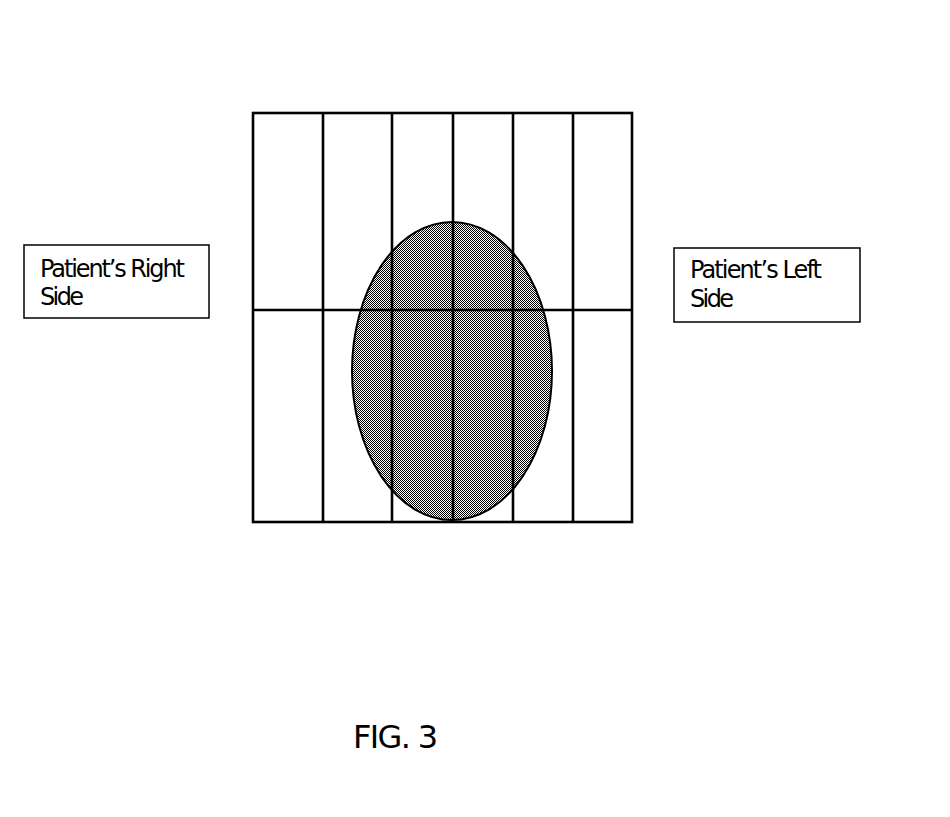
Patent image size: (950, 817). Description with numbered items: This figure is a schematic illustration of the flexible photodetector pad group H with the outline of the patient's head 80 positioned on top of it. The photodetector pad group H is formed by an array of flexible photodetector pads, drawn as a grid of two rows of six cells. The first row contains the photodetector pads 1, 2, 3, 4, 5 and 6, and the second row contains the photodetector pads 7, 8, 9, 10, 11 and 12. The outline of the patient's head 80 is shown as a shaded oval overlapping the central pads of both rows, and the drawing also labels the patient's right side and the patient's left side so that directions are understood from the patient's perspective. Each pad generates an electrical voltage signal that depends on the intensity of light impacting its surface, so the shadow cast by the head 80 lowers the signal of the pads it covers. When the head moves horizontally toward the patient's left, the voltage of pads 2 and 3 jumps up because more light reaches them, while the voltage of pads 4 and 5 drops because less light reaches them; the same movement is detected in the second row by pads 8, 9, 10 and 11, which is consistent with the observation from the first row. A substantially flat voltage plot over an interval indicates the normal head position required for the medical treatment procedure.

The flexible photodetector pad group H is at (656, 86).
The outline of the patient's head 80 is at (497, 282).
The flexible photodetector pad 1 is at (288, 211).
The flexible photodetector pad 2 is at (357, 211).
The flexible photodetector pad 3 is at (422, 211).
The flexible photodetector pad 4 is at (483, 211).
The flexible photodetector pad 5 is at (543, 211).
The flexible photodetector pad 6 is at (602, 211).
The flexible photodetector pad 7 is at (288, 416).
The flexible photodetector pad 8 is at (357, 416).
The flexible photodetector pad 9 is at (422, 416).
The flexible photodetector pad 10 is at (483, 416).
The flexible photodetector pad 11 is at (543, 416).
The flexible photodetector pad 12 is at (602, 416).